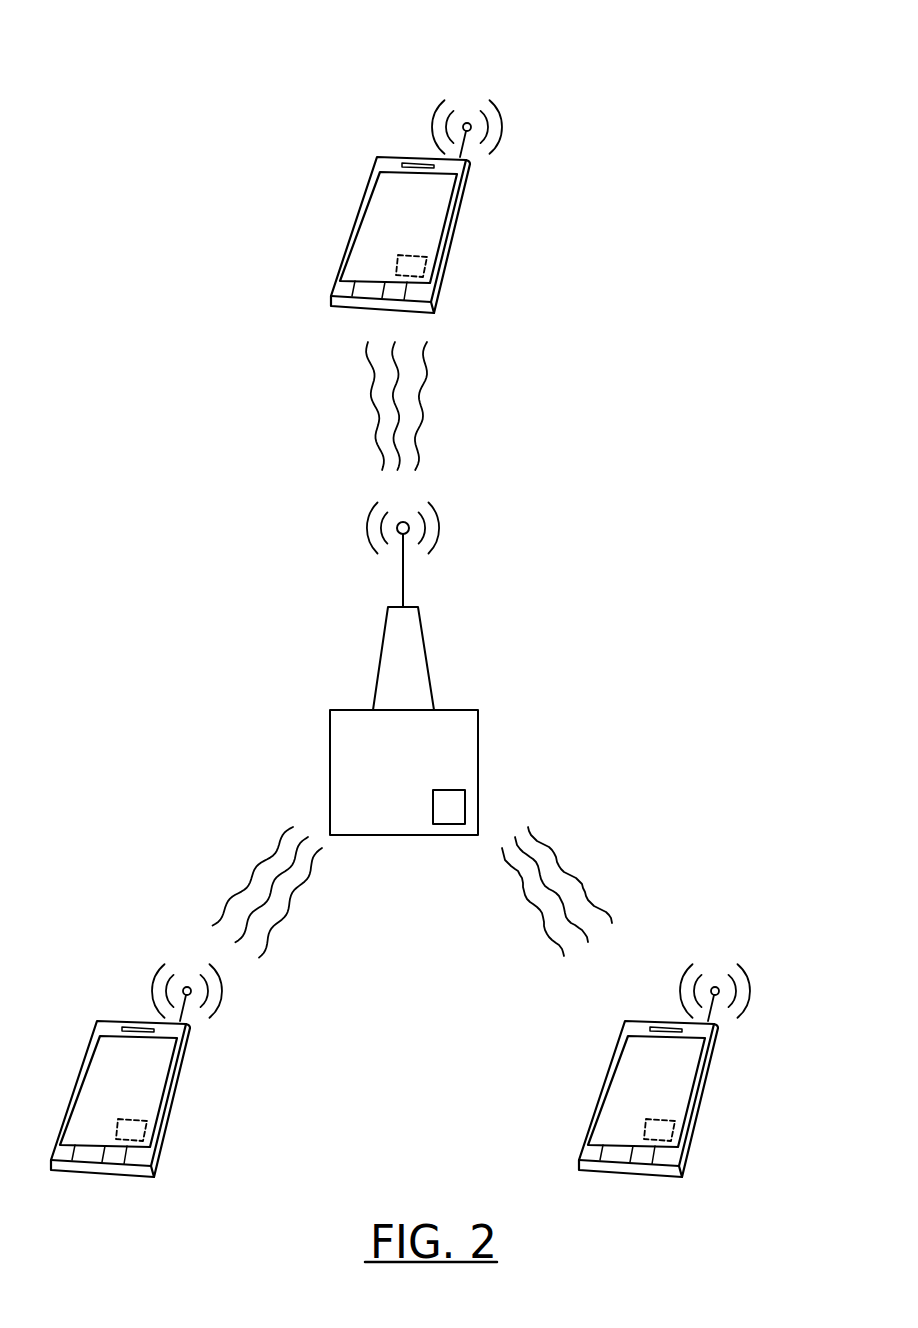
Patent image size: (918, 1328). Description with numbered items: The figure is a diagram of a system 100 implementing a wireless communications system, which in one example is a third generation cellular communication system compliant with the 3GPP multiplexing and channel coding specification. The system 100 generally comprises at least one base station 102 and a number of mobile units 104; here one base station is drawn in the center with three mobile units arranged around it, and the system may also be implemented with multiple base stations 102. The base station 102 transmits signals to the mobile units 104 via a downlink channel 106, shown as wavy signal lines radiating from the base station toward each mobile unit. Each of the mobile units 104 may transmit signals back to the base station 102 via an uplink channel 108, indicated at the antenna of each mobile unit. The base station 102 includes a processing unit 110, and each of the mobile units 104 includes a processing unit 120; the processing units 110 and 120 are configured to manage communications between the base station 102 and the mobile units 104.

The system 100 is at (230, 40).
The base station 102 is at (353, 710).
The mobile unit 104 is at (392, 157).
The downlink channel 106 is at (368, 390).
The uplink channel 108 is at (507, 128).
The processing unit 110 is at (433, 818).
The processing unit 120 is at (418, 255).